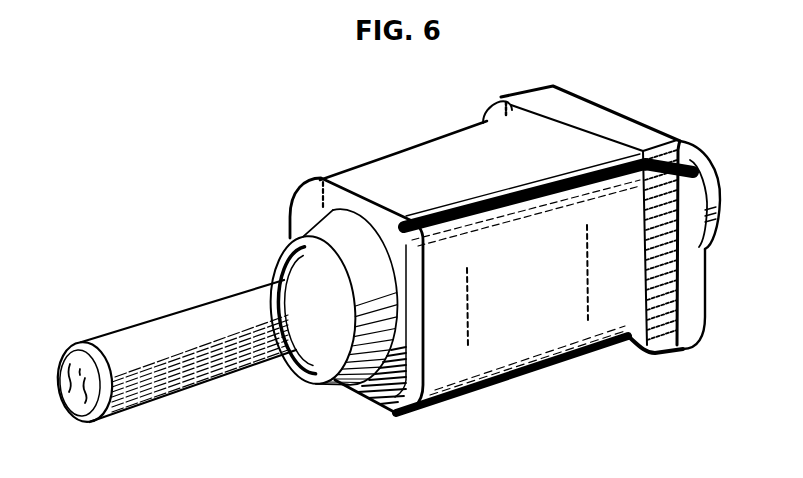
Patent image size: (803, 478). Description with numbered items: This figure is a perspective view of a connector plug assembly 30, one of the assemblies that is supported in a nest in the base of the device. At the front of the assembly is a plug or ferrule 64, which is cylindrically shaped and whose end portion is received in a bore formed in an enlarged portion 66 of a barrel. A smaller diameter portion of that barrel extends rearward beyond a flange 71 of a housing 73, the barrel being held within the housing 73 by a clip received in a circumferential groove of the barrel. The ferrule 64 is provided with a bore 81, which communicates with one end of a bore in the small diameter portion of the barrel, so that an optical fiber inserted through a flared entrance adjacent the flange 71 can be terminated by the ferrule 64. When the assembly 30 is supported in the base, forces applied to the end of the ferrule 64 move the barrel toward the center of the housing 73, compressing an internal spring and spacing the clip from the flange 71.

The connector plug assembly 30 is at (293, 132).
The plug or ferrule 64 is at (160, 333).
The enlarged portion 66 is at (294, 257).
The flange 71 is at (620, 128).
The housing 73 is at (513, 340).
The bore 81 is at (79, 385).